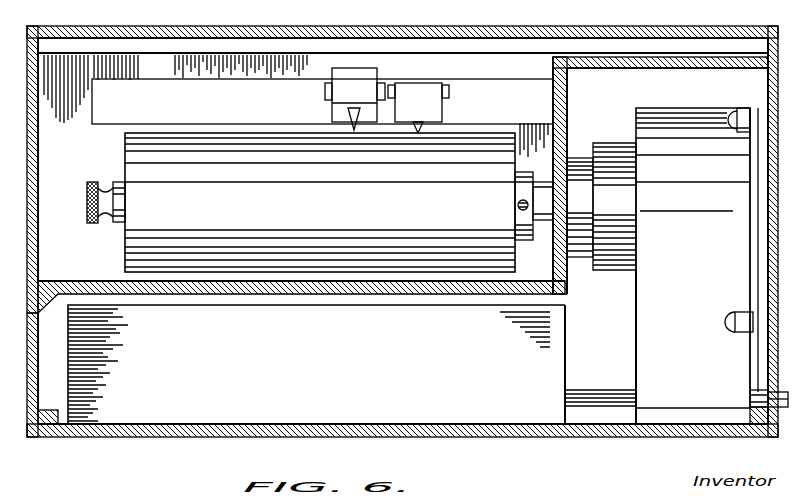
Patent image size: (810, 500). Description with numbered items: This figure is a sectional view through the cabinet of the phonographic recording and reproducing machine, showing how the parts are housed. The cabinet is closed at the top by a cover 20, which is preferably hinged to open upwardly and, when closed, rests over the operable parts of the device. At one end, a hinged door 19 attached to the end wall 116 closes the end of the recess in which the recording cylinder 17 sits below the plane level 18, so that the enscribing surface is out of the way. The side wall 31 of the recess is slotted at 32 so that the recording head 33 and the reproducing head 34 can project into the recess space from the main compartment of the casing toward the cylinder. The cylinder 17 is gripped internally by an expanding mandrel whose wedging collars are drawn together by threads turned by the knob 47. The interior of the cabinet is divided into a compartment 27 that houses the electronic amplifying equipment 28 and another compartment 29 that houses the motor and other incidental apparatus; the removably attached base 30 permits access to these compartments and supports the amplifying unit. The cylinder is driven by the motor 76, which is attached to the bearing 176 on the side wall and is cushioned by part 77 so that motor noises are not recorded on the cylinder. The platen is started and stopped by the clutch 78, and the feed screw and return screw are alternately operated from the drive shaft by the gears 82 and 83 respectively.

The cover 20 is at (390, 29).
The hinged door 19 is at (38, 144).
The plane level 18 is at (580, 55).
The end wall 116 is at (28, 326).
The base 30 is at (143, 438).
The compartment 27 is at (301, 352).
The electronic amplifying equipment 28 is at (316, 364).
The compartment 29 is at (601, 347).
The side wall 31 is at (296, 106).
The slot 32 is at (185, 80).
The recording head 33 is at (418, 108).
The reproducing head 34 is at (355, 99).
The recording cylinder 17 is at (325, 202).
The knob 47 is at (88, 196).
The clutch 78 is at (580, 207).
The gear 82 is at (614, 179).
The gear 83 is at (614, 234).
The motor 76 is at (712, 266).
The cushioning part 77 is at (750, 276).
The bearing 176 is at (762, 296).